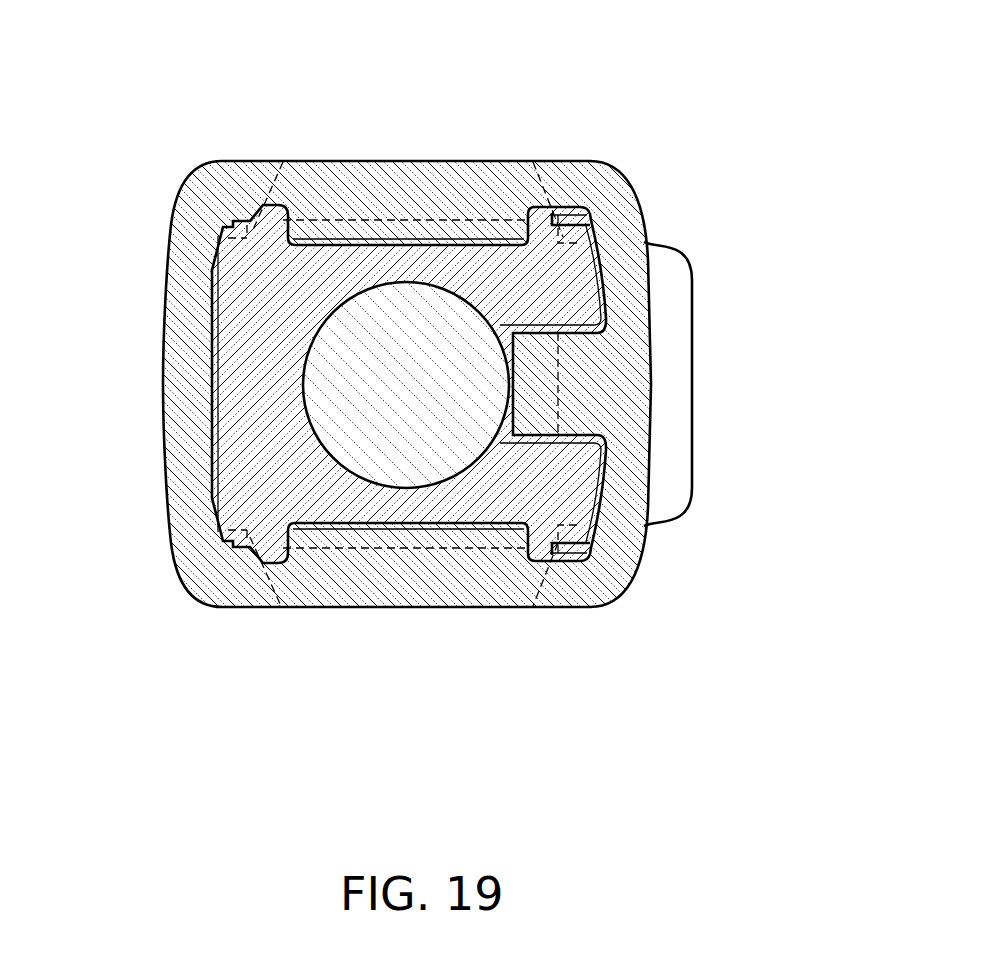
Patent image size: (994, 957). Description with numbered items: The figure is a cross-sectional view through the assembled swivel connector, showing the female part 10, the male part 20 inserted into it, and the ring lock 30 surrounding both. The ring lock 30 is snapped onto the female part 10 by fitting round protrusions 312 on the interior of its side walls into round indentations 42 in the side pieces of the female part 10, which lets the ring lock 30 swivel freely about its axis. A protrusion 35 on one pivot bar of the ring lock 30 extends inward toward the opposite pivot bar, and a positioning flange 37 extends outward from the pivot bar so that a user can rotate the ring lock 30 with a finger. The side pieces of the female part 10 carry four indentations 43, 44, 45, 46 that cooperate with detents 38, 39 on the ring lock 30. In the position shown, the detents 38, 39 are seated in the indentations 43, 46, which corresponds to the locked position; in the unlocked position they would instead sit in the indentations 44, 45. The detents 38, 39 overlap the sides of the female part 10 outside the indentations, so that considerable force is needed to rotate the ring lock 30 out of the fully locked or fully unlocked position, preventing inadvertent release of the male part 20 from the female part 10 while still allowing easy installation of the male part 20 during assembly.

The female part 10 is at (237, 280).
The male part 20 is at (418, 396).
The ring lock 30 is at (585, 170).
The protrusion 312 is at (438, 222).
The protrusion 35 is at (520, 380).
The positioning flange 37 is at (681, 445).
The detent 38 is at (582, 553).
The detent 39 is at (573, 210).
The indentation 42 is at (313, 244).
The indentation 43 is at (242, 230).
The indentation 44 is at (238, 536).
The indentation 45 is at (570, 235).
The indentation 46 is at (570, 533).